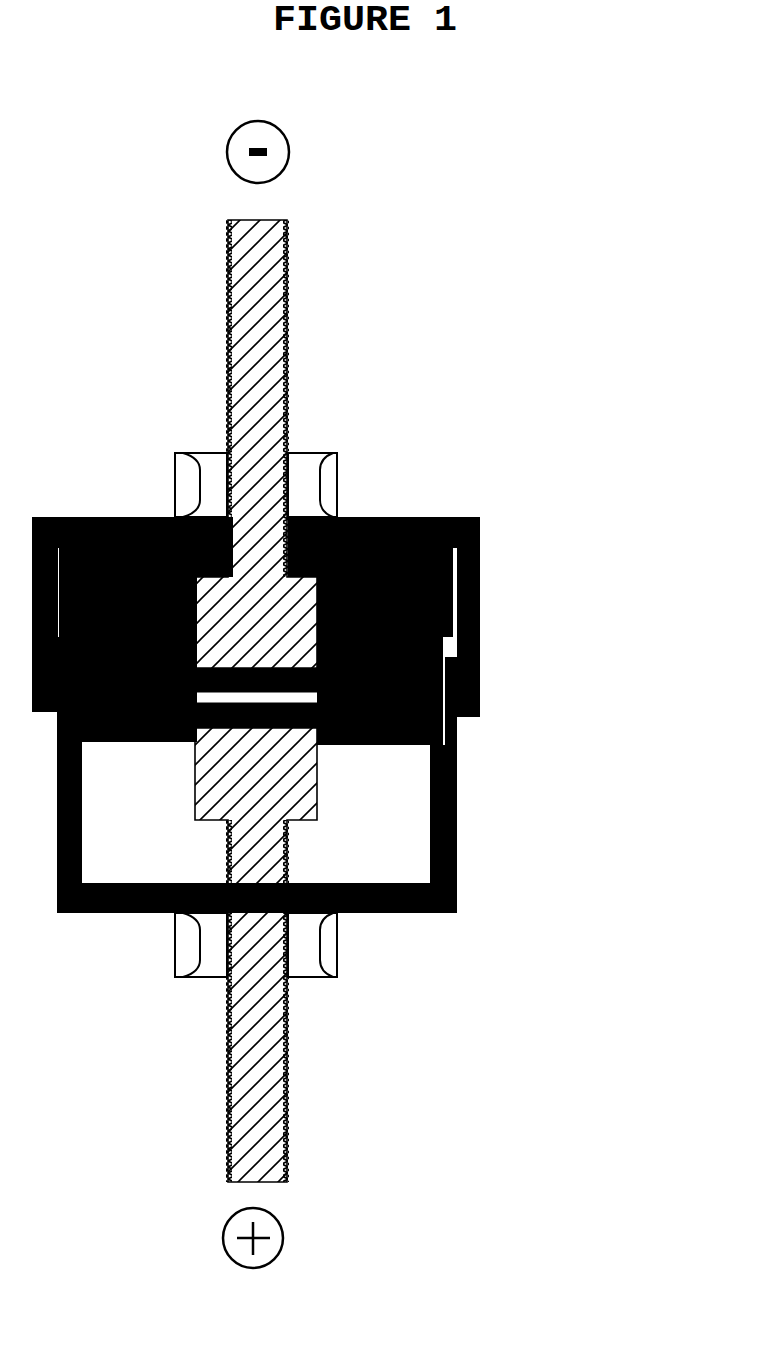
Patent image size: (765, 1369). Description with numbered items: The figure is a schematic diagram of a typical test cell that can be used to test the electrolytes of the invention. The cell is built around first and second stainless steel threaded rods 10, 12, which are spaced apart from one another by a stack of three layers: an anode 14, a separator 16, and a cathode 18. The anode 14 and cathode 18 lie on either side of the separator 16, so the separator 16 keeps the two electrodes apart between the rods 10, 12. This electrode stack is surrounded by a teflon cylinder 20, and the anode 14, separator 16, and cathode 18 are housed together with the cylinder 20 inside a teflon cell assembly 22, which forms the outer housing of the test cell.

The first stainless steel threaded rod 10 is at (252, 257).
The second stainless steel threaded rod 12 is at (250, 1098).
The anode 14 is at (312, 683).
The separator 16 is at (312, 700).
The cathode 18 is at (317, 712).
The teflon cylinder 20 is at (455, 623).
The teflon cell assembly 22 is at (383, 913).